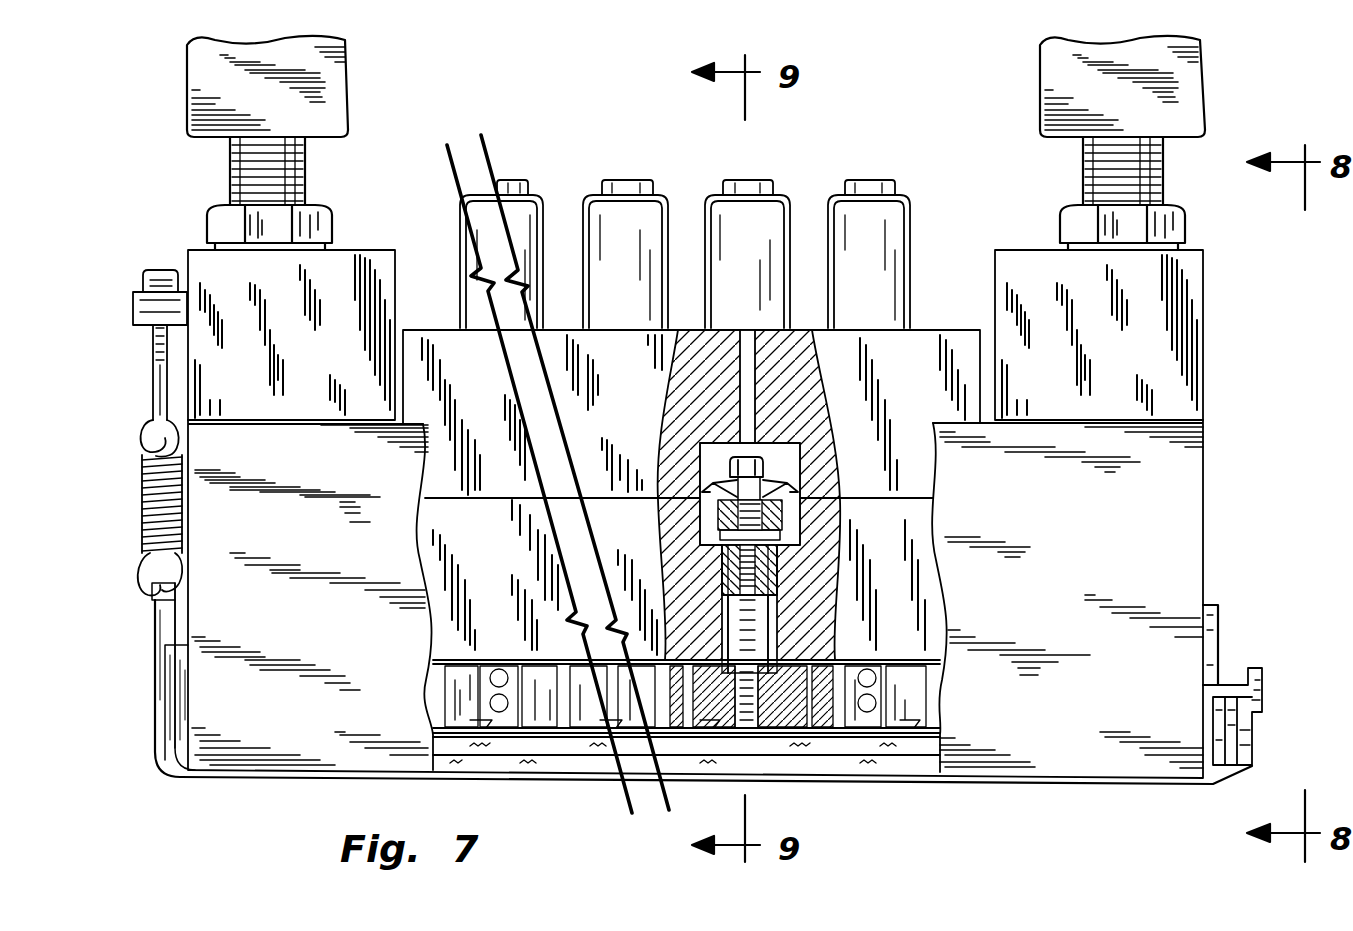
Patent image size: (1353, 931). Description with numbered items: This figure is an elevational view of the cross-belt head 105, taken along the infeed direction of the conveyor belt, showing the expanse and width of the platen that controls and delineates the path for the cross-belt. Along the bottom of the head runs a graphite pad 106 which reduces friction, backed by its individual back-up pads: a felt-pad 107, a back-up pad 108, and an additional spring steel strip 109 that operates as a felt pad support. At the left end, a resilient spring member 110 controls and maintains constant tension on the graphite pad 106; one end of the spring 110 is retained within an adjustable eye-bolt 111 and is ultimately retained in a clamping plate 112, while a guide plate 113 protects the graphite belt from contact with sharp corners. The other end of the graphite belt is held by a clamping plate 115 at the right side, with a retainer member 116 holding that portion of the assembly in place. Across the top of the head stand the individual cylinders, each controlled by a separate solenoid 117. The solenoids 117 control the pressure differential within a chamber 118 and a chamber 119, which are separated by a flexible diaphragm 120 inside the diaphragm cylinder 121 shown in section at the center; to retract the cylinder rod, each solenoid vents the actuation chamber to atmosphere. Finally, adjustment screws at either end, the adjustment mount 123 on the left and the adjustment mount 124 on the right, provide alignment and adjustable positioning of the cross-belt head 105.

The cross-belt head 105 is at (1092, 560).
The graphite pad 106 is at (1065, 790).
The felt-pad 107 is at (475, 758).
The back-up pad 108 is at (582, 748).
The spring steel strip 109 is at (800, 740).
The resilient spring member 110 is at (142, 490).
The adjustable eye-bolt 111 is at (153, 385).
The clamping plate 112 is at (150, 604).
The guide plate 113 is at (175, 702).
The clamping plate 115 is at (1252, 745).
The retainer member 116 is at (1218, 627).
The solenoids 117 is at (788, 195).
The chamber 118 is at (822, 420).
The chamber 119 is at (800, 520).
The flexible diaphragm 120 is at (798, 487).
The diaphragm cylinder 121 is at (718, 462).
The adjustment mount 123 is at (232, 166).
The adjustment mount 124 is at (1083, 162).